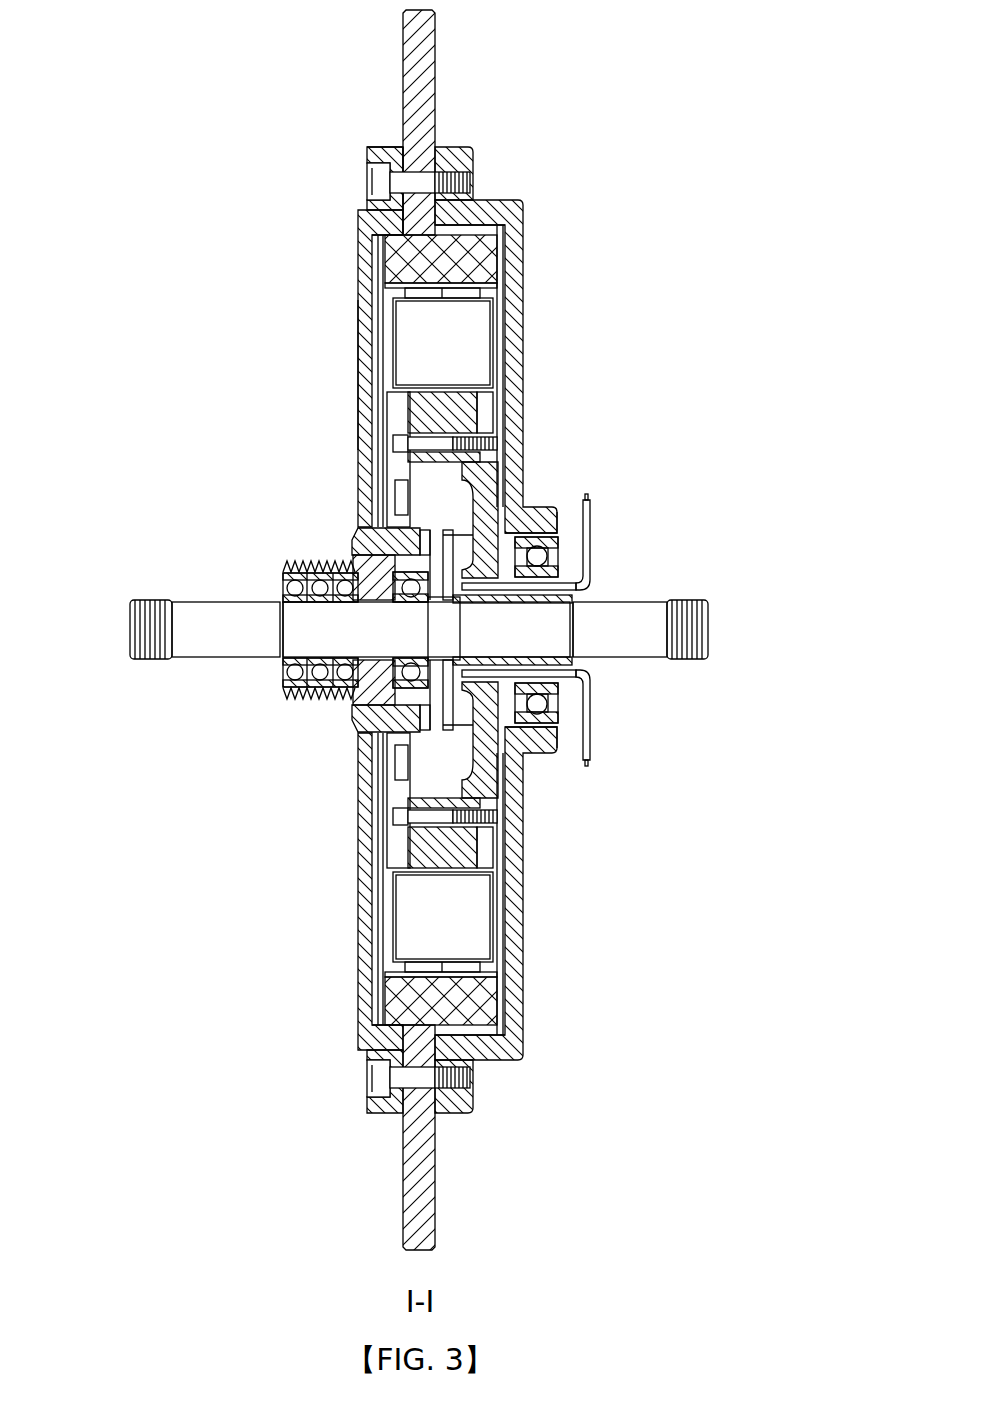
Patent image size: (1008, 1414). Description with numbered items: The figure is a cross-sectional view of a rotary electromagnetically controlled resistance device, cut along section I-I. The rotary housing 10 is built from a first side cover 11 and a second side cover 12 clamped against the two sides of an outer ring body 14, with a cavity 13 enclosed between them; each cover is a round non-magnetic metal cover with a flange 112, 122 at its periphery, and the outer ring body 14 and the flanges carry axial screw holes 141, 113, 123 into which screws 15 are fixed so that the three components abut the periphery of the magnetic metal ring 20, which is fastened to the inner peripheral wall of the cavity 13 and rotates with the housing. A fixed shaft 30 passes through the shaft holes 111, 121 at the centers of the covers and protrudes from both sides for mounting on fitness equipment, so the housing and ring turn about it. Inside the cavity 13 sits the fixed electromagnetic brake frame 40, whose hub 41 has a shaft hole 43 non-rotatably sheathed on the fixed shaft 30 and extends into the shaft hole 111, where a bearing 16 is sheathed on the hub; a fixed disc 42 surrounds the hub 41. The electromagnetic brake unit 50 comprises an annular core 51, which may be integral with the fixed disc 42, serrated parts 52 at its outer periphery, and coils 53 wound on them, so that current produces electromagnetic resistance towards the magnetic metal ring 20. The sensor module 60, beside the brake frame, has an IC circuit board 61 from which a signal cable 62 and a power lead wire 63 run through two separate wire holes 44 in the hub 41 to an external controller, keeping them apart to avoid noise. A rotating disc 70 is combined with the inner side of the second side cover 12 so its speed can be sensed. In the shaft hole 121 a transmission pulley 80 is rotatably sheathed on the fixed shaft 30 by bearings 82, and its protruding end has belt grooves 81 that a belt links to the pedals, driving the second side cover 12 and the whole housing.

The rotary housing 10 is at (364, 378).
The first side cover 11 is at (525, 220).
The second side cover 12 is at (372, 277).
The cavity 13 is at (500, 255).
The outer ring body 14 is at (418, 70).
The axial screw hole 141 is at (420, 165).
The screw 15 is at (377, 185).
The bearing 16 is at (540, 553).
The magnetic metal ring 20 is at (462, 268).
The fixed shaft 30 is at (648, 635).
The fixed electromagnetic brake frame 40 is at (525, 757).
The hub 41 is at (586, 732).
The fixed disc 42 is at (487, 760).
The shaft hole 43 is at (585, 647).
The wire hole 44 is at (590, 575).
The electromagnetic brake unit 50 is at (395, 925).
The annular core 51 is at (415, 850).
The serrated part 52 is at (385, 1015).
The coil 53 is at (410, 905).
The sensor module 60 is at (443, 707).
The IC circuit board 61 is at (378, 732).
The signal cable 62 is at (586, 748).
The power lead wire 63 is at (590, 585).
The rotating disc 70 is at (425, 706).
The transmission pulley 80 is at (370, 560).
The belt groove 81 is at (300, 562).
The bearing 82 is at (295, 585).
The shaft hole 111 is at (525, 515).
The flange 112 is at (470, 160).
The axial screw hole 113 is at (455, 180).
The shaft hole 121 is at (372, 530).
The flange 122 is at (385, 150).
The axial screw hole 123 is at (377, 152).